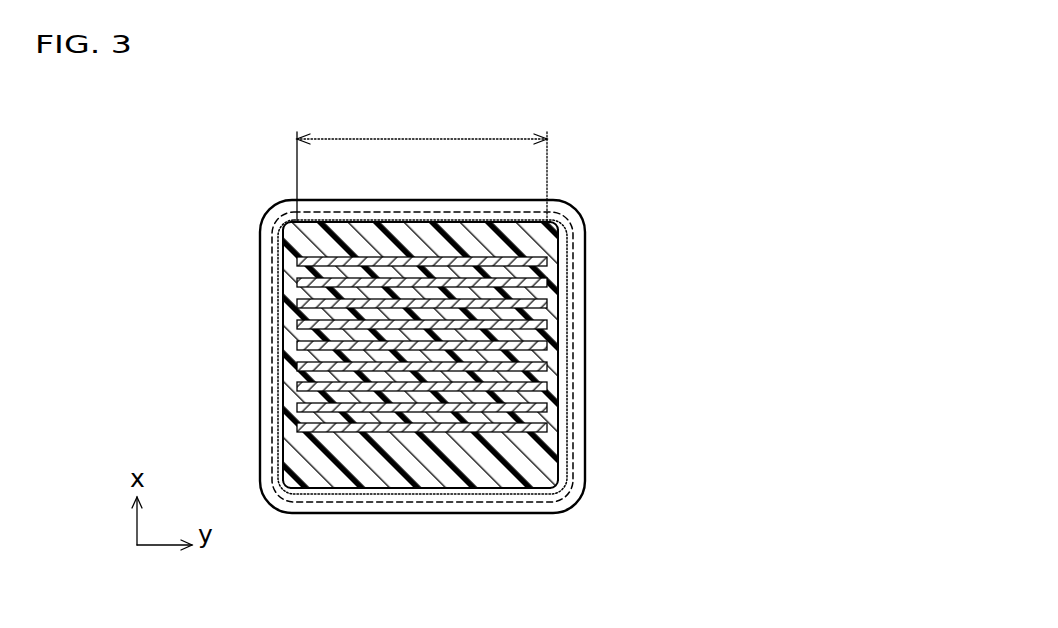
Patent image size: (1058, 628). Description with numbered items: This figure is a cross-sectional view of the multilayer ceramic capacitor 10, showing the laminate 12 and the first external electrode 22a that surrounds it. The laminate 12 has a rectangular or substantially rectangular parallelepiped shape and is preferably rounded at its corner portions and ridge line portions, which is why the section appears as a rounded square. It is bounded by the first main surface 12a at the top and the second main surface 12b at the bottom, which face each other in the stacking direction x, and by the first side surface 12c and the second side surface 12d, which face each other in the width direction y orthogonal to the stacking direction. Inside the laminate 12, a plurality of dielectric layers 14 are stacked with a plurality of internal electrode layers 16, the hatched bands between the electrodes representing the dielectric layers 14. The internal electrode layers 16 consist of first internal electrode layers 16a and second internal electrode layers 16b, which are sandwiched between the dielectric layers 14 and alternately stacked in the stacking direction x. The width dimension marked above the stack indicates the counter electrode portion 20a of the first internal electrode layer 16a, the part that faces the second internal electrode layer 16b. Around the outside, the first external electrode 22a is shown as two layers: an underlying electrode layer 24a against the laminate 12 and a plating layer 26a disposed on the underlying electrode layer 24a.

The multilayer ceramic capacitor 10 is at (496, 331).
The laminate 12 is at (501, 360).
The first main surface 12a is at (395, 222).
The second main surface 12b is at (455, 490).
The first side surface 12c is at (283, 362).
The second side surface 12d is at (558, 342).
The dielectric layers 14 is at (398, 480).
The internal electrode layers 16 is at (501, 366).
The first internal electrode layers 16a is at (298, 259).
The second internal electrode layers 16b is at (547, 324).
The counter electrode portion 20a is at (422, 163).
The first external electrode 22a is at (520, 356).
The underlying electrode layer 24a is at (565, 271).
The plating layer 26a is at (578, 247).